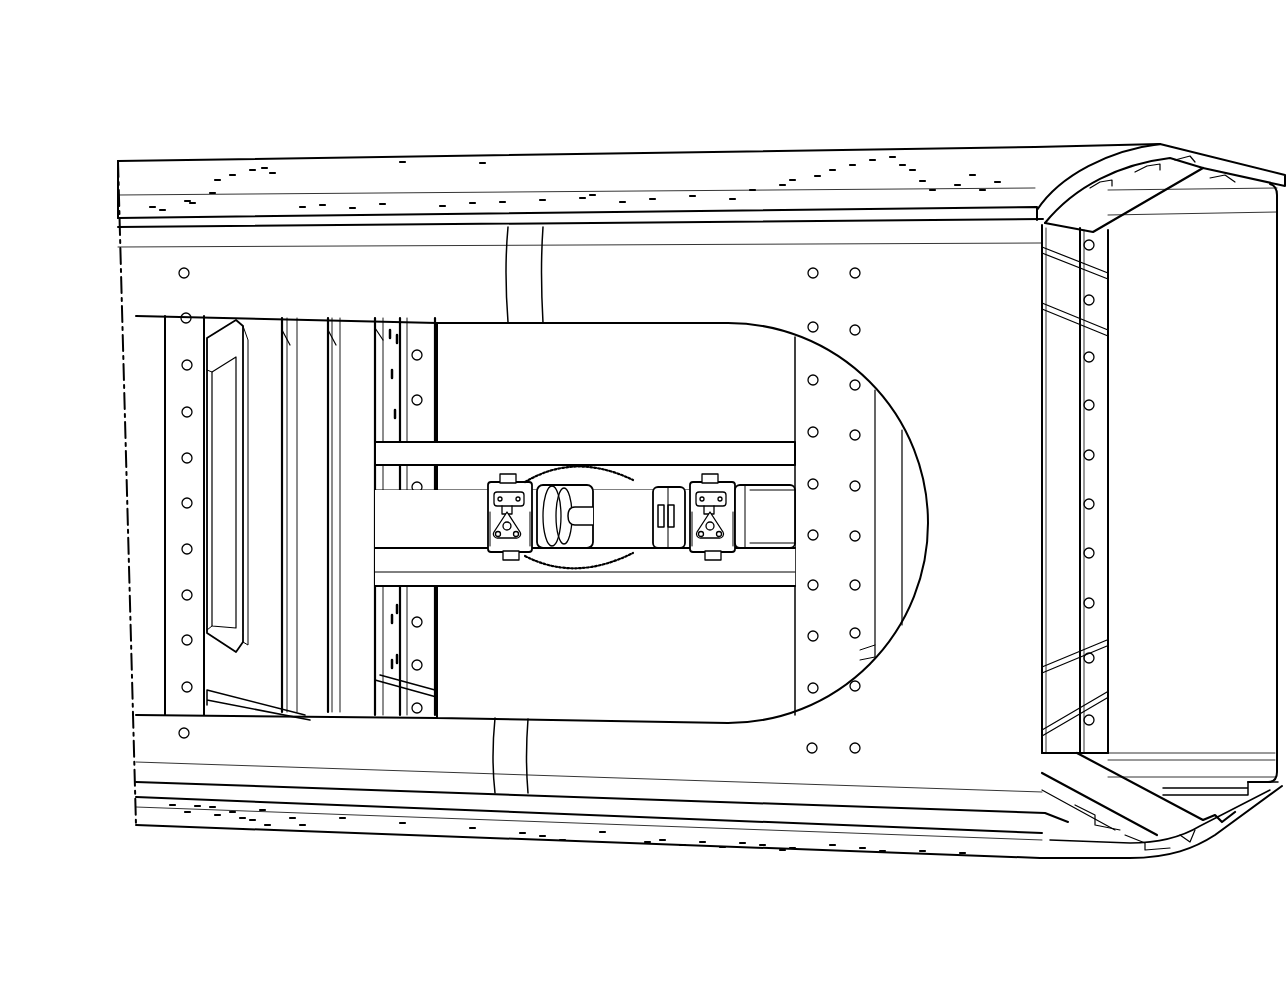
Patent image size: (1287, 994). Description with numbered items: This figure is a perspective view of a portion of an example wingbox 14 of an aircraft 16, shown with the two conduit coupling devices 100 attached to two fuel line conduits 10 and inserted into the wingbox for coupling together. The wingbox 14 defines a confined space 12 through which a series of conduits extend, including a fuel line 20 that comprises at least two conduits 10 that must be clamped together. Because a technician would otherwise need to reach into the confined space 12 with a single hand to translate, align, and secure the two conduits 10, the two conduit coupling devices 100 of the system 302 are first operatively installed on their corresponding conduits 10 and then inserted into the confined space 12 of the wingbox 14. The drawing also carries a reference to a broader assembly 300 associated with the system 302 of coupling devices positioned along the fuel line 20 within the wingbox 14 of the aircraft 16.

The conduit 10 is at (443, 502).
The confined space 12 is at (580, 388).
The wingbox 14 is at (1163, 117).
The aircraft 16 is at (1167, 70).
The fuel line 20 is at (437, 552).
The conduit coupling device 100 is at (515, 570).
The mounting assembly 300 is at (700, 410).
The system 302 is at (642, 413).